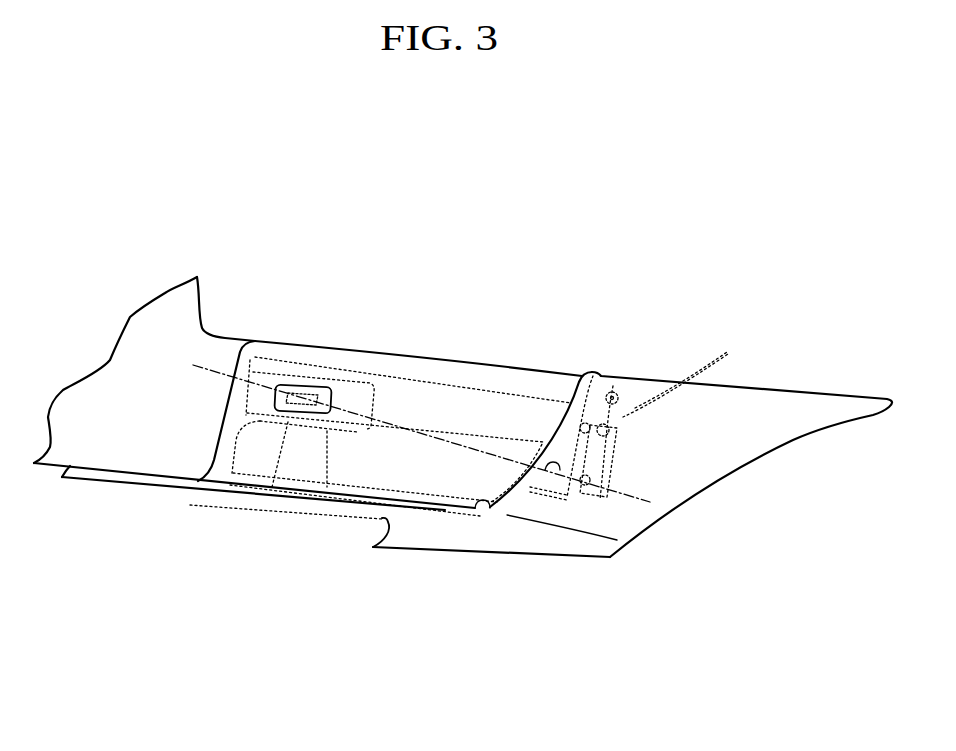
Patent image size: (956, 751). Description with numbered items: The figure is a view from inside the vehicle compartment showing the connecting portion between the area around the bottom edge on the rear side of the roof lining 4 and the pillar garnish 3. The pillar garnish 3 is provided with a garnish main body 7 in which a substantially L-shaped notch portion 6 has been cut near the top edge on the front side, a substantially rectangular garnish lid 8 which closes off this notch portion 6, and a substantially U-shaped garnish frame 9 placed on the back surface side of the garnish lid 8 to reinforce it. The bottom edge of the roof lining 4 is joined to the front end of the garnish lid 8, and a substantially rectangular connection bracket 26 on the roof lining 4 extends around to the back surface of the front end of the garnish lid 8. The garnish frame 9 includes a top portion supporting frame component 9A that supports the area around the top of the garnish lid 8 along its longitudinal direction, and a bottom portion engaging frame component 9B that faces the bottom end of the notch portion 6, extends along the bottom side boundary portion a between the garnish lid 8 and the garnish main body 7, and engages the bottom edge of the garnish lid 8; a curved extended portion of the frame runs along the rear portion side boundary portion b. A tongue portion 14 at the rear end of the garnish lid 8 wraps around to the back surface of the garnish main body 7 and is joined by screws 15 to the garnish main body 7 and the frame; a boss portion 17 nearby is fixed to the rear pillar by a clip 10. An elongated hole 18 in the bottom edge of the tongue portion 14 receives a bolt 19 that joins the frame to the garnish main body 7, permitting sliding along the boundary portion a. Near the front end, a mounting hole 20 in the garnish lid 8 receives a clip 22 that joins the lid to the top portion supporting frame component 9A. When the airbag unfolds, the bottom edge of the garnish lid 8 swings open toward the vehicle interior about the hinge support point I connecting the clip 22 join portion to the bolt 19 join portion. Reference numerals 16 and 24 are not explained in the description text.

The pillar garnish 3 is at (599, 358).
The roof lining 4 is at (140, 325).
The notch portion 6 is at (490, 508).
The garnish main body 7 is at (802, 400).
The garnish lid 8 is at (432, 358).
The garnish frame 9 is at (474, 380).
The top portion supporting frame component 9A is at (393, 397).
The bottom portion engaging frame component 9B is at (447, 522).
The clip 10 is at (625, 415).
The tongue portion 14 is at (608, 445).
The screws 15 is at (682, 368).
The bracket portion 16 is at (608, 433).
The boss portion 17 is at (618, 392).
The elongated hole 18 is at (585, 483).
The bolt 19 is at (567, 497).
The mounting hole 20 is at (240, 476).
The clip 22 is at (332, 335).
The seat belt anchor opening 24 is at (312, 388).
The connection bracket 26 is at (320, 487).
The bottom side boundary portion a is at (362, 488).
The rear portion side boundary portion b is at (580, 387).
The hinge support point I is at (258, 348).